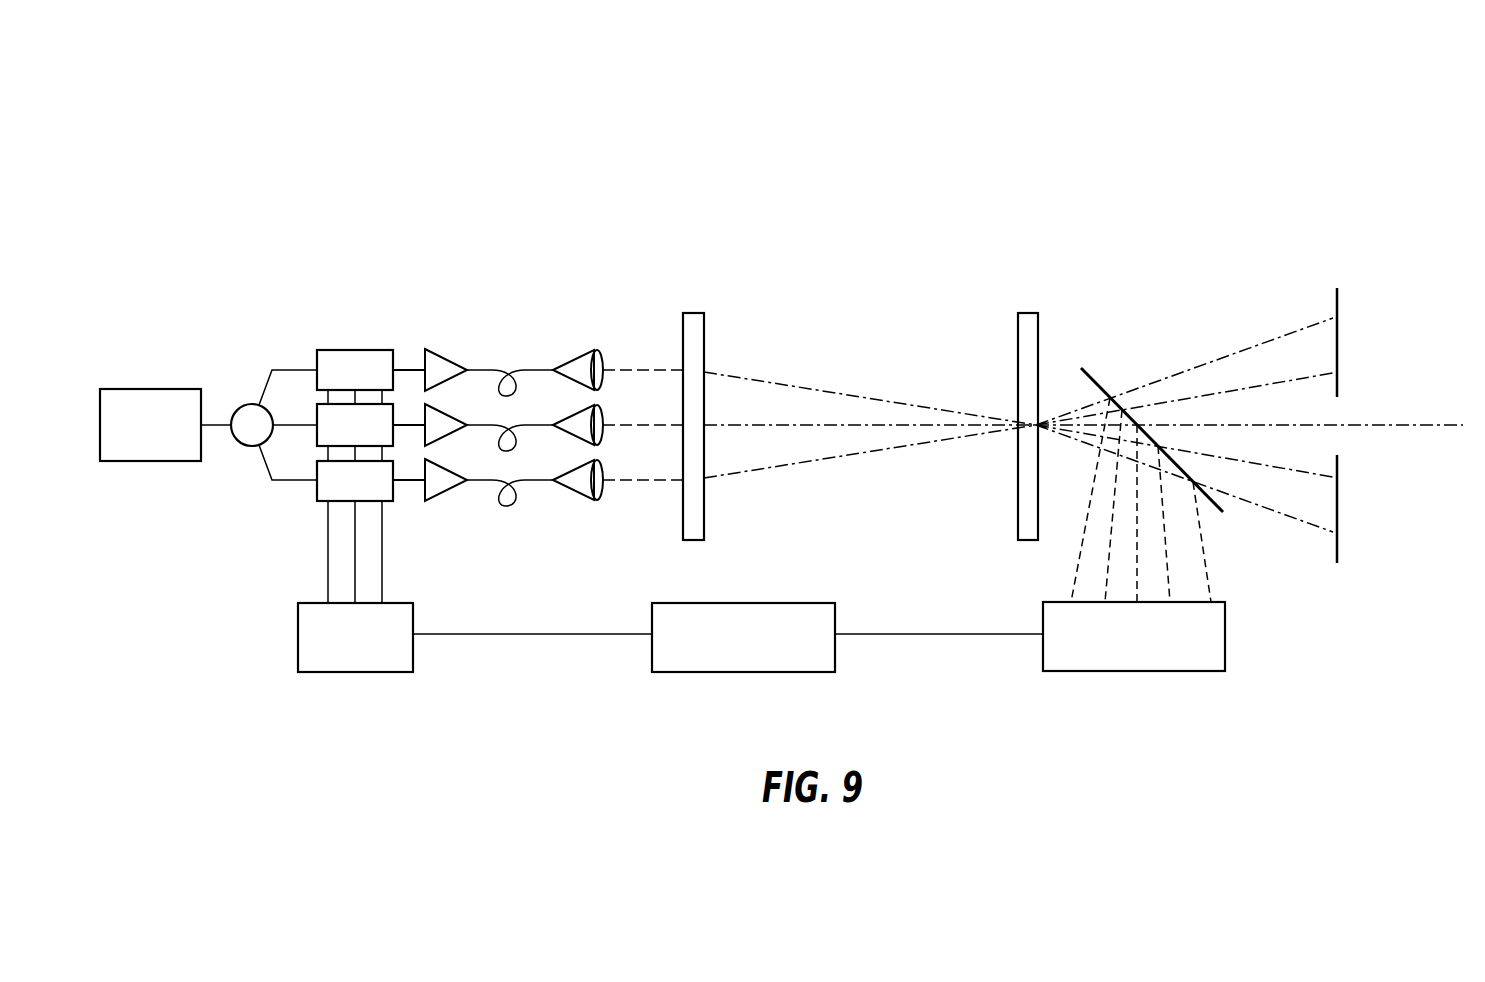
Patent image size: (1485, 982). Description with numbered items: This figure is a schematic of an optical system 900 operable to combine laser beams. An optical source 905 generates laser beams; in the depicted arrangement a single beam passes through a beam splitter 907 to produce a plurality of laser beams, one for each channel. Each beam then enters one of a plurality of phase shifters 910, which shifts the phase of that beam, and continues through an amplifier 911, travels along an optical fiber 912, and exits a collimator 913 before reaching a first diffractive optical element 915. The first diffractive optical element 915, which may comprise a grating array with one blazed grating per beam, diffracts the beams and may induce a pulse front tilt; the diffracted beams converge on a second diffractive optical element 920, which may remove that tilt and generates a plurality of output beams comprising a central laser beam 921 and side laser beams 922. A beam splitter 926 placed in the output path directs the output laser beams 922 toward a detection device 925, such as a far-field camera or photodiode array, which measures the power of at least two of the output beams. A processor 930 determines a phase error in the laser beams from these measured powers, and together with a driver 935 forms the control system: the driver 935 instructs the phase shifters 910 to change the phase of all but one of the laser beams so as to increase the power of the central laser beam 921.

The optical system 900 is at (1250, 112).
The optical source 905 is at (148, 389).
The beam splitter 907 is at (250, 403).
The plurality of phase shifters 910 is at (371, 462).
The amplifier 911 is at (446, 465).
The optical fiber 912 is at (492, 496).
The collimator 913 is at (575, 465).
The first diffractive optical element 915 is at (695, 313).
The second diffractive optical element 920 is at (1028, 313).
The central laser beam 921 is at (1398, 425).
The side laser beams 922 is at (1248, 502).
The detection device 925 is at (1218, 602).
The beam splitter 926 is at (1097, 383).
The processor 930 is at (805, 603).
The driver 935 is at (398, 603).